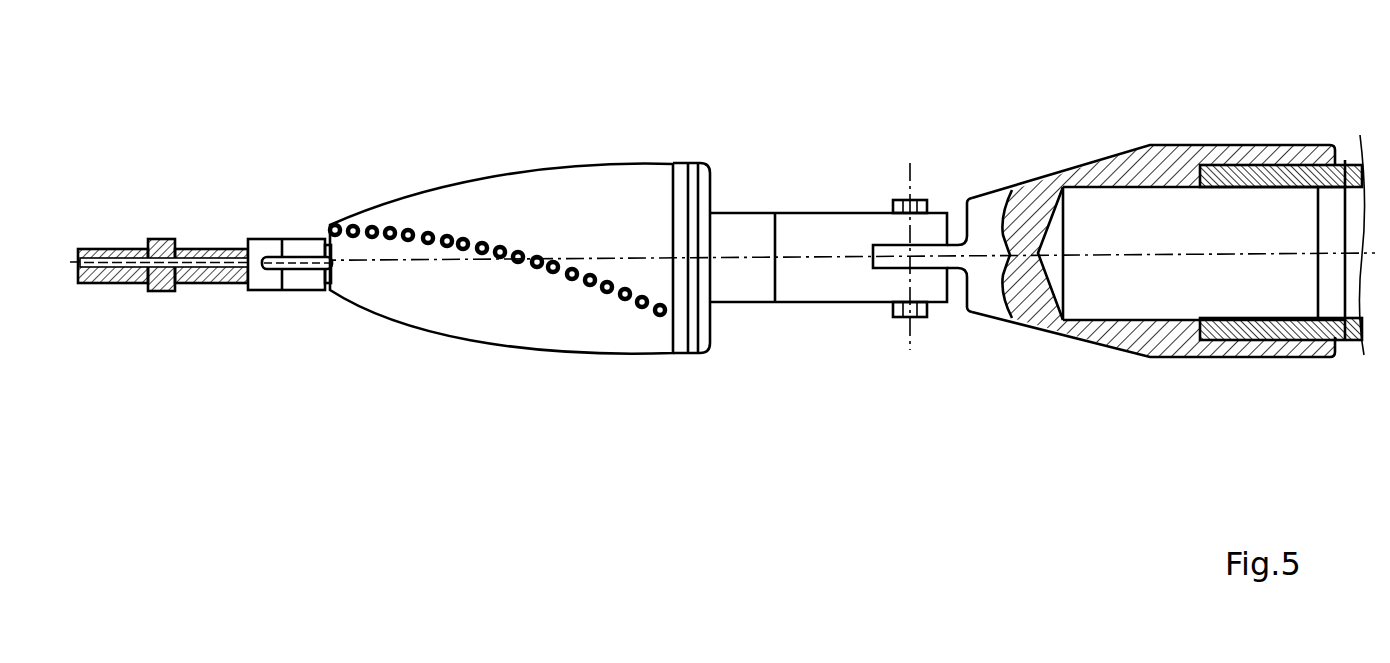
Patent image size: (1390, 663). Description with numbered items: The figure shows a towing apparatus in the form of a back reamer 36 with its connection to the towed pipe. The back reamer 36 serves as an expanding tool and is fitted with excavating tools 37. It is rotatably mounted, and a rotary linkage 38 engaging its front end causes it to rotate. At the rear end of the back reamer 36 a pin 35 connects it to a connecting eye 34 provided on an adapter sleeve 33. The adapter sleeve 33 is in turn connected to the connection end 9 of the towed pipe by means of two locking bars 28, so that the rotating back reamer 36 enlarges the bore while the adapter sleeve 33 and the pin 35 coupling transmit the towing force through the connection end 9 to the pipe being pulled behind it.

The connection end 9 is at (1355, 170).
The locking bars 28 is at (1298, 165).
The adapter sleeve 33 is at (1132, 170).
The connecting eye 34 is at (921, 236).
The pin 35 is at (918, 318).
The back reamer 36 is at (482, 312).
The excavating tools 37 is at (450, 243).
The rotary linkage 38 is at (272, 283).